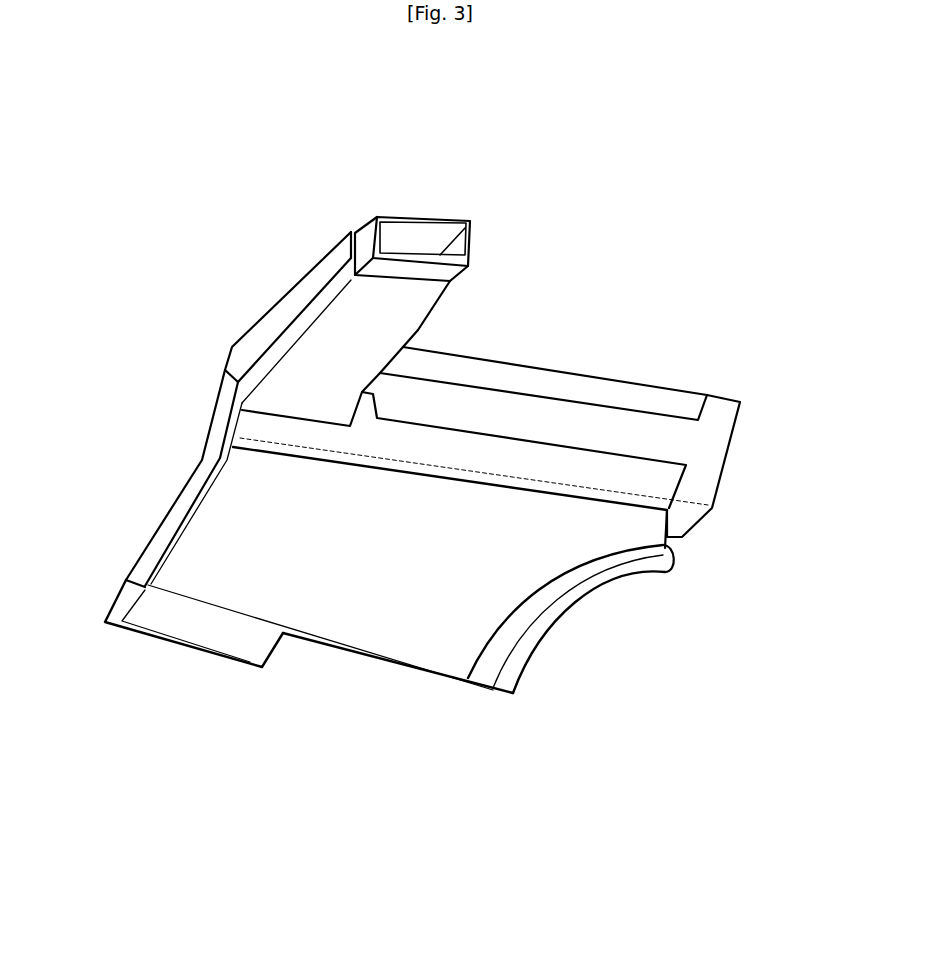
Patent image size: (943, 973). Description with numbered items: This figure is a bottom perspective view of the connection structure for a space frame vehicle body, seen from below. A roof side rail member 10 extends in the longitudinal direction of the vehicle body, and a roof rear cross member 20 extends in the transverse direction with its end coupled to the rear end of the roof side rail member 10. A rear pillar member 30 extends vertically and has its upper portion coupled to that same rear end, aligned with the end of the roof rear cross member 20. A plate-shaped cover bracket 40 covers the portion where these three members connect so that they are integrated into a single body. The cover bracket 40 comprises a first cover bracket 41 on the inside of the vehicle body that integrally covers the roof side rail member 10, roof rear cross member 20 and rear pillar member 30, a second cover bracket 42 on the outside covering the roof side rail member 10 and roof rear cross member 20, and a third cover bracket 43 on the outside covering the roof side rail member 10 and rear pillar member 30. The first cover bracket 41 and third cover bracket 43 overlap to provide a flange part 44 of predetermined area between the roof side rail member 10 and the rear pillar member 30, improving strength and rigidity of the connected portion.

The roof side rail member 10 is at (703, 450).
The roof rear cross member 20 is at (425, 218).
The rear pillar member 30 is at (200, 630).
The cover bracket 40 is at (577, 615).
The first cover bracket 41 is at (317, 345).
The second cover bracket 42 is at (607, 393).
The third cover bracket 43 is at (167, 533).
The flange part 44 is at (442, 602).